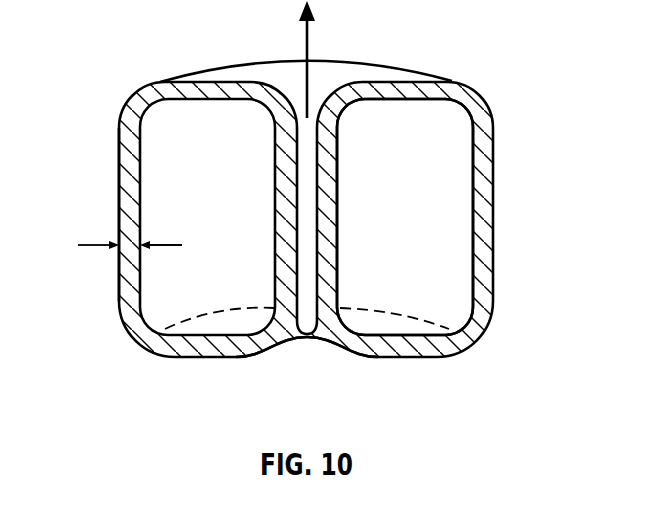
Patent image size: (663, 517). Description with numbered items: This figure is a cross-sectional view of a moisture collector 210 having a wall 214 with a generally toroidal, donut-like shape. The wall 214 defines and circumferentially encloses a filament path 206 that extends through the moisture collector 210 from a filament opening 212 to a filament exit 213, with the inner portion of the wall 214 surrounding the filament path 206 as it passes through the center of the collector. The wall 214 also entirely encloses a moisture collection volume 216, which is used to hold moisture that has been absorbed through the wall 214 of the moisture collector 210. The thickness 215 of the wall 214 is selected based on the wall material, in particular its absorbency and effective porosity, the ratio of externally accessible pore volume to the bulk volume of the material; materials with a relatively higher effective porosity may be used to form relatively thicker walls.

The filament path 206 is at (309, 40).
The moisture collector 210 is at (131, 46).
The filament opening 212 is at (293, 361).
The filament exit 213 is at (284, 82).
The wall 214 is at (119, 169).
The thickness 215 is at (92, 244).
The moisture collection volume 216 is at (457, 208).